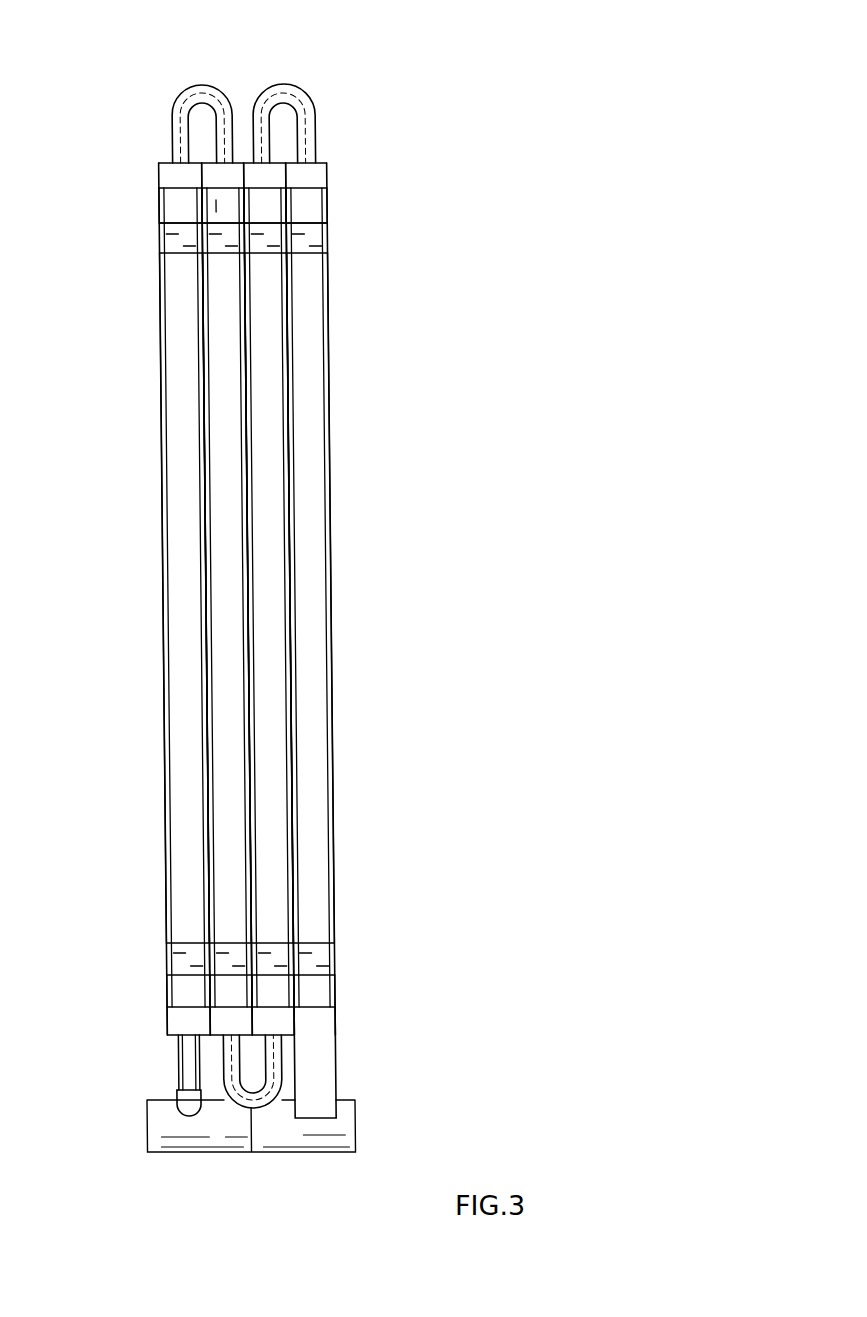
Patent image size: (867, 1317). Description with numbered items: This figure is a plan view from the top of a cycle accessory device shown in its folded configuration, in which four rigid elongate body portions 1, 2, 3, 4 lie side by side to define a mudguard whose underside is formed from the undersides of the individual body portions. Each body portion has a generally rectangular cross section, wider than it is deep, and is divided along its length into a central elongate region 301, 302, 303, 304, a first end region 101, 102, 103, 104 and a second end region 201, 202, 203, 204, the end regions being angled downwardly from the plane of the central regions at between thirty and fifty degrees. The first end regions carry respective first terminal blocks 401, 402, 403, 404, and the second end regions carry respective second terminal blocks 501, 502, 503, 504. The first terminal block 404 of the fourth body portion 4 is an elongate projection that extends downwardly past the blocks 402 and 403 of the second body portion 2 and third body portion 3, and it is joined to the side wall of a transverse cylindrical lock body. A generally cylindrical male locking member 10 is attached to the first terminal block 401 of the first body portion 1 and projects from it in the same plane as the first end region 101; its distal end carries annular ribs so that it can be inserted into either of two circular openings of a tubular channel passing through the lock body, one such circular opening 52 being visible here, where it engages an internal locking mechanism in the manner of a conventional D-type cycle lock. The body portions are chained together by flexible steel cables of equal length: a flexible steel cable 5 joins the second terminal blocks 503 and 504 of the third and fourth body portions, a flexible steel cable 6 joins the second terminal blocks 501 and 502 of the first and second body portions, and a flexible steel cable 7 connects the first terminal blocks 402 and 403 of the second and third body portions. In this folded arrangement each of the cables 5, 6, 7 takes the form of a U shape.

The first body portion 1 is at (183, 590).
The second body portion 2 is at (230, 523).
The third body portion 3 is at (268, 552).
The fourth body portion 4 is at (305, 615).
The flexible steel cable 5 is at (297, 98).
The flexible steel cable 6 is at (190, 95).
The flexible steel cable 7 is at (270, 1072).
The male locking member 10 is at (188, 1048).
The circular opening 52 is at (177, 1100).
The first end region 101 is at (182, 987).
The first end region 102 is at (237, 982).
The first end region 103 is at (282, 990).
The first end region 104 is at (323, 985).
The second end region 201 is at (175, 205).
The second end region 202 is at (217, 205).
The second end region 203 is at (275, 198).
The second end region 204 is at (300, 210).
The central elongate region 301 is at (187, 373).
The central elongate region 302 is at (230, 430).
The central elongate region 303 is at (270, 387).
The central elongate region 304 is at (307, 422).
The first terminal block 401 is at (183, 1025).
The first terminal block 402 is at (225, 1023).
The first terminal block 403 is at (272, 1023).
The first terminal block 404 is at (315, 1053).
The second terminal block 501 is at (177, 177).
The second terminal block 502 is at (217, 172).
The second terminal block 503 is at (273, 167).
The second terminal block 504 is at (310, 178).